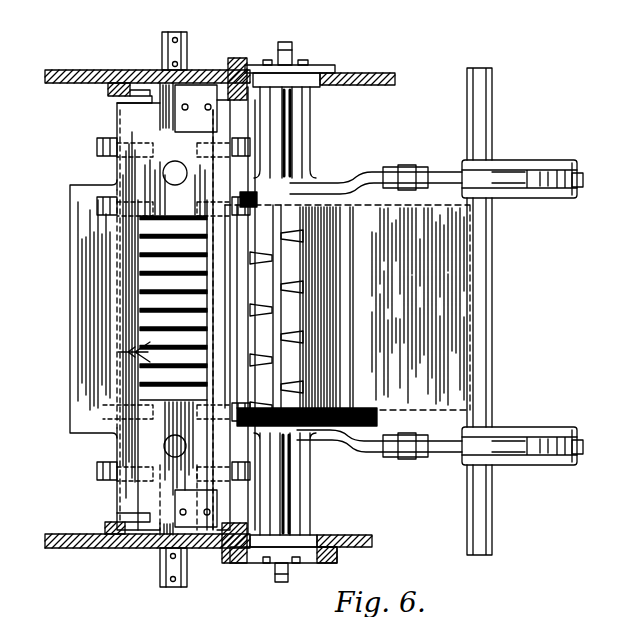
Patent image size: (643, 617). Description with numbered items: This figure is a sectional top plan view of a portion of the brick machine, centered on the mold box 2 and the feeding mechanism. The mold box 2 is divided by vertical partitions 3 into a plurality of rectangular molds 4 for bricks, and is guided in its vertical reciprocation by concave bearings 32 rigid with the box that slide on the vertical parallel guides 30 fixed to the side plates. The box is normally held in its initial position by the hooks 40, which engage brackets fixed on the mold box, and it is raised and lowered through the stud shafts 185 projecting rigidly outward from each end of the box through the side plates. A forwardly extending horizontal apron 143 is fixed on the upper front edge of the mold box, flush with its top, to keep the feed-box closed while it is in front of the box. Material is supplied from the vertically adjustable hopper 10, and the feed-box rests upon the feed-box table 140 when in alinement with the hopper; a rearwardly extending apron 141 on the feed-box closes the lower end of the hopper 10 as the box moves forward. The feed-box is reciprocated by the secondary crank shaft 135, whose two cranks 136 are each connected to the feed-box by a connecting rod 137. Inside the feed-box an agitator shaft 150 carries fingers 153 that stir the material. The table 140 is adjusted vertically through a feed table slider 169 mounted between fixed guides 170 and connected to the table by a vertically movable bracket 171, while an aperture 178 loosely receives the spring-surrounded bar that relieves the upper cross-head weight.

The mold box 2 is at (147, 315).
The vertical partitions 3 is at (183, 275).
The molds 4 is at (126, 352).
The hopper 10 is at (320, 215).
The vertical parallel guides 30 is at (110, 88).
The concave bearings 32 is at (118, 103).
The hook 40 is at (232, 72).
The secondary crank shaft 135 is at (490, 123).
The cranks 136 is at (545, 156).
The connecting rod 137 is at (372, 173).
The feed-box table 140 is at (172, 182).
The apron 141 is at (418, 306).
The apron 143 is at (70, 295).
The horizontal shaft 150 is at (270, 258).
The fingers 153 is at (283, 237).
The feed table slider 169 is at (300, 62).
The fixed guides 170 is at (342, 64).
The vertically movable bracket 171 is at (300, 128).
The aperture 178 is at (164, 447).
The stud shaft 185 is at (203, 22).